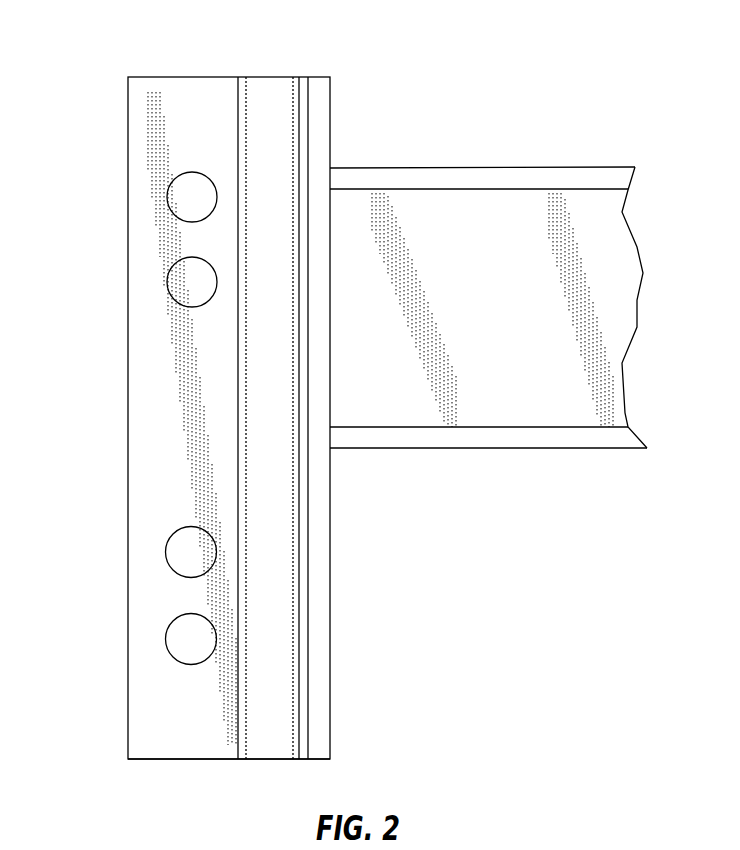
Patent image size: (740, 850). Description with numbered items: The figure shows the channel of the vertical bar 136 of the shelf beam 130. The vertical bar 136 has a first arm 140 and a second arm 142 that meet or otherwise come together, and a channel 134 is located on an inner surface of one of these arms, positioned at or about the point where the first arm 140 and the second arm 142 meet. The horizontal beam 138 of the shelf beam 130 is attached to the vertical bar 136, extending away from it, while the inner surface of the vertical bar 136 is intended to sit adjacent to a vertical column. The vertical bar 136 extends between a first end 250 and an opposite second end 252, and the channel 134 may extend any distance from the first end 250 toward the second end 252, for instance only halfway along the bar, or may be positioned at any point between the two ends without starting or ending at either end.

The shelf beam 130 is at (358, 480).
The channel 134 is at (261, 103).
The vertical bar 136 is at (332, 620).
The horizontal beam 138 is at (482, 448).
The first arm 140 is at (128, 90).
The second arm 142 is at (332, 118).
The first end 250 is at (270, 77).
The second end 252 is at (265, 760).